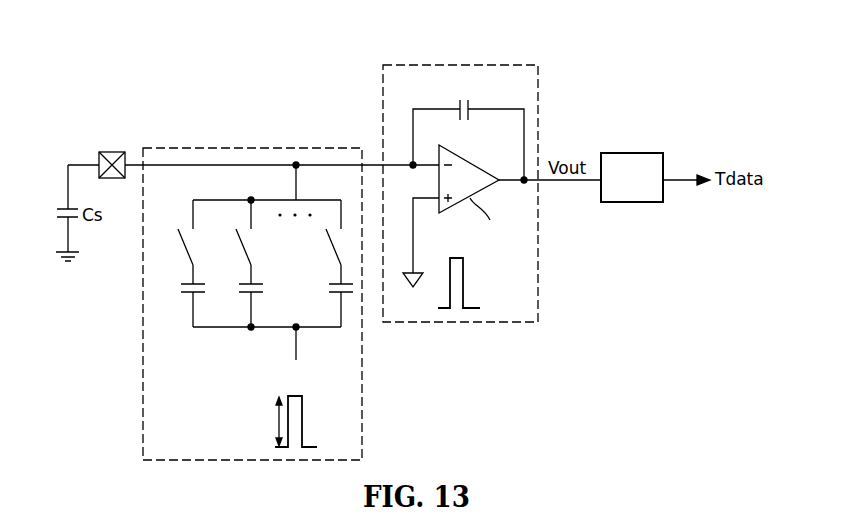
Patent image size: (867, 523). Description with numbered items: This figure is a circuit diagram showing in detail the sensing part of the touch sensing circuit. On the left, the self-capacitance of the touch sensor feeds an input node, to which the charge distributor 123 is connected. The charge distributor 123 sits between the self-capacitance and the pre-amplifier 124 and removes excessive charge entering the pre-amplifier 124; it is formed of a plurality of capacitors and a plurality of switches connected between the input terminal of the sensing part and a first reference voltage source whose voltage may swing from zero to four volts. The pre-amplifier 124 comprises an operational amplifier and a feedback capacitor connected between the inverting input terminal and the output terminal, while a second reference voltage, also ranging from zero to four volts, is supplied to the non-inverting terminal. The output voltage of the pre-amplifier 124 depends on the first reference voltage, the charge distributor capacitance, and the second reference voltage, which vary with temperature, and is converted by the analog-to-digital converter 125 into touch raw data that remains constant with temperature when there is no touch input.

The charge distributor 123 is at (283, 147).
The pre-amplifier 124 is at (460, 65).
The ADC 125 is at (630, 153).